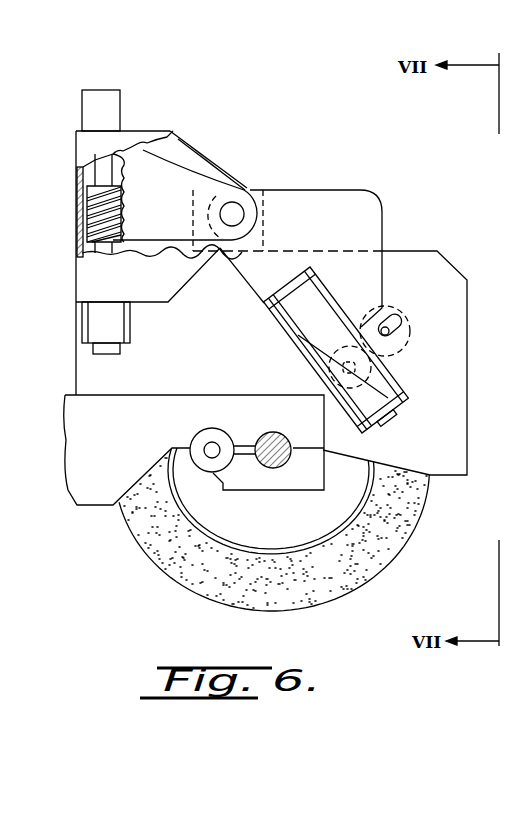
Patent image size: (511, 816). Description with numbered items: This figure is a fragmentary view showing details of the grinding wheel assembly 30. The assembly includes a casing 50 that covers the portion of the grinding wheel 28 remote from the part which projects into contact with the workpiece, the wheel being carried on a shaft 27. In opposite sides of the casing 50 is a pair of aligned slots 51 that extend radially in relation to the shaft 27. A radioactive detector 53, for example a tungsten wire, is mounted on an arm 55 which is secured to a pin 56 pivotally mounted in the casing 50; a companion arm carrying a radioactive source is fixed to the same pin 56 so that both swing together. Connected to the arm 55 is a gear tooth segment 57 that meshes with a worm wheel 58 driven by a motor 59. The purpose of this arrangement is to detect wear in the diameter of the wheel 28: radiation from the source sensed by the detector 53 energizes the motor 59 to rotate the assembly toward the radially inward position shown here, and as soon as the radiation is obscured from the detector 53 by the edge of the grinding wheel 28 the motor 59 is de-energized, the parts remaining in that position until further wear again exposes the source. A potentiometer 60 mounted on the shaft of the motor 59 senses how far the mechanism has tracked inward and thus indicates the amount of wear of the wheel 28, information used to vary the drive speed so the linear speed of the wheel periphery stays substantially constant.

The shaft 27 is at (268, 442).
The grinding wheel 28 is at (178, 591).
The grinding wheel assembly 30 is at (350, 160).
The casing 50 is at (431, 260).
The aligned slots 51 is at (378, 337).
The radioactive detector 53 is at (298, 335).
The arm 55 is at (260, 283).
The pin 56 is at (241, 213).
The gear tooth segment 57 is at (162, 180).
The worm wheel 58 is at (86, 212).
The motor 59 is at (86, 321).
The potentiometer 60 is at (85, 104).